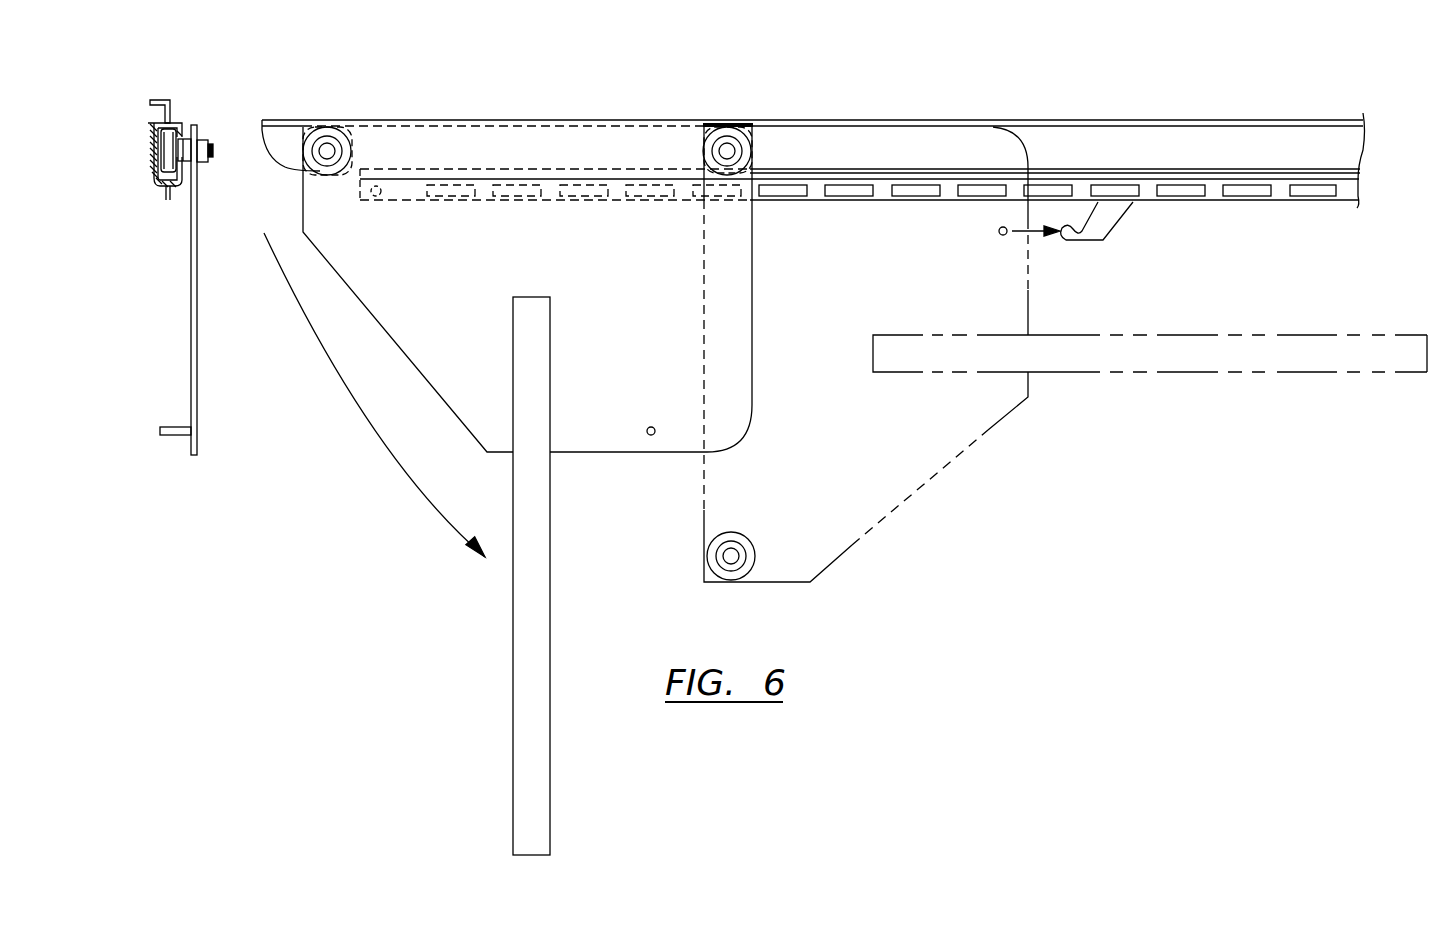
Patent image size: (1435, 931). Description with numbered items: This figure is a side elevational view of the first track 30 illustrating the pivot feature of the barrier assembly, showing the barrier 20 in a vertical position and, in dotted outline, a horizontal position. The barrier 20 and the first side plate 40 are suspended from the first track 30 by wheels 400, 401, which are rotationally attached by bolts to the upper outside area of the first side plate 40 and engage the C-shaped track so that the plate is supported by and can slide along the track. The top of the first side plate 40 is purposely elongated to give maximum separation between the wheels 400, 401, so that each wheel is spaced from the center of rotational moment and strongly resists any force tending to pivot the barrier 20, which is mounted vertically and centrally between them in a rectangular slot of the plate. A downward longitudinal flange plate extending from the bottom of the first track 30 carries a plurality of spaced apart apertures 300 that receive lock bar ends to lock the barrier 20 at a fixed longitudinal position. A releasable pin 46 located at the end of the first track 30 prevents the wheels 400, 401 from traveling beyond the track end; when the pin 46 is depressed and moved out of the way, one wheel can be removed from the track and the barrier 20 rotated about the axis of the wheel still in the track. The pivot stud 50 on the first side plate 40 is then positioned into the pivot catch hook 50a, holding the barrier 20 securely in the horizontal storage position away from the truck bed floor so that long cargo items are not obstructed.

The barrier 20 is at (535, 809).
The first track 30 is at (167, 125).
The first side plate 40 is at (197, 373).
The releasable pin 46 is at (375, 203).
The pivot stud 50 is at (177, 437).
The pivot catch hook 50a is at (1110, 233).
The aperture 300 is at (1308, 196).
The wheel 400 is at (330, 143).
The wheel 401 is at (731, 143).